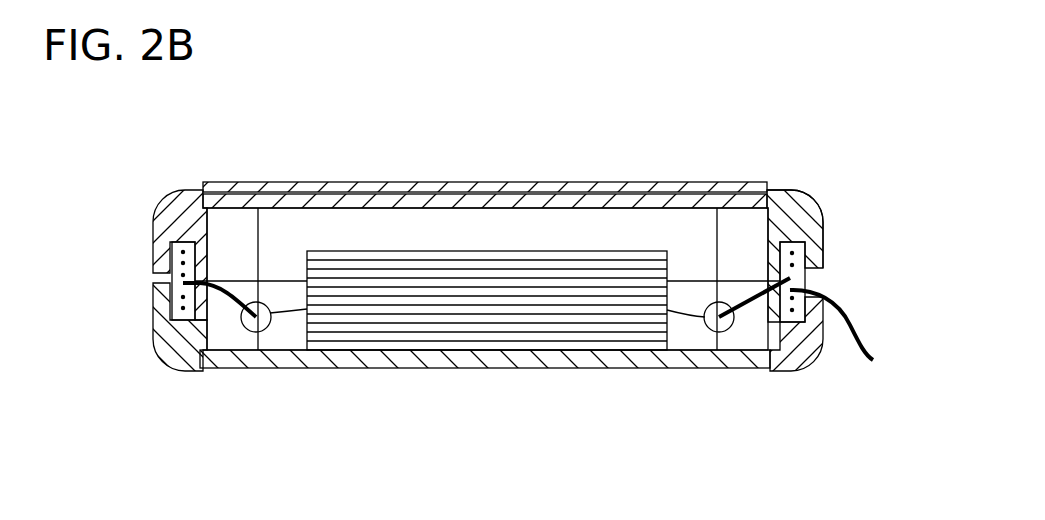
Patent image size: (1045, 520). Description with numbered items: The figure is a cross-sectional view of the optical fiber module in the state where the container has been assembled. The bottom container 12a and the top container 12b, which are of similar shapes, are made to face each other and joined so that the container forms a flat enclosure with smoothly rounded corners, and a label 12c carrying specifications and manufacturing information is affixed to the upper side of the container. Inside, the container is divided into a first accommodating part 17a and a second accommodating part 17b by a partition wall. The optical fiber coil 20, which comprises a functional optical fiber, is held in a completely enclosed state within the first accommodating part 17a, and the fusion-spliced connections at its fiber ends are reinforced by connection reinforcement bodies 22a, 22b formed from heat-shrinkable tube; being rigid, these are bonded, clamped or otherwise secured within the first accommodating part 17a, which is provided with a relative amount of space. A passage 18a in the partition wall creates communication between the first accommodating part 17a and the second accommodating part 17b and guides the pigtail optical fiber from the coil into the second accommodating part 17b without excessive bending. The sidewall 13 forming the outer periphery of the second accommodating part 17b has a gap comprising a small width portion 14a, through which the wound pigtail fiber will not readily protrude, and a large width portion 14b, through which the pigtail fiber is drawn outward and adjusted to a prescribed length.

The bottom container 12a is at (795, 374).
The top container 12b is at (805, 188).
The label 12c is at (610, 185).
The sidewall 13 is at (153, 317).
The small width portion 14a is at (153, 281).
The large width portion 14b is at (808, 280).
The first accommodating part 17a is at (402, 220).
The second accommodating part 17b is at (172, 250).
The passage 18a is at (770, 276).
The optical fiber coil 20 is at (522, 250).
The connection reinforcement body 22a is at (724, 333).
The connection reinforcement body 22b is at (263, 333).